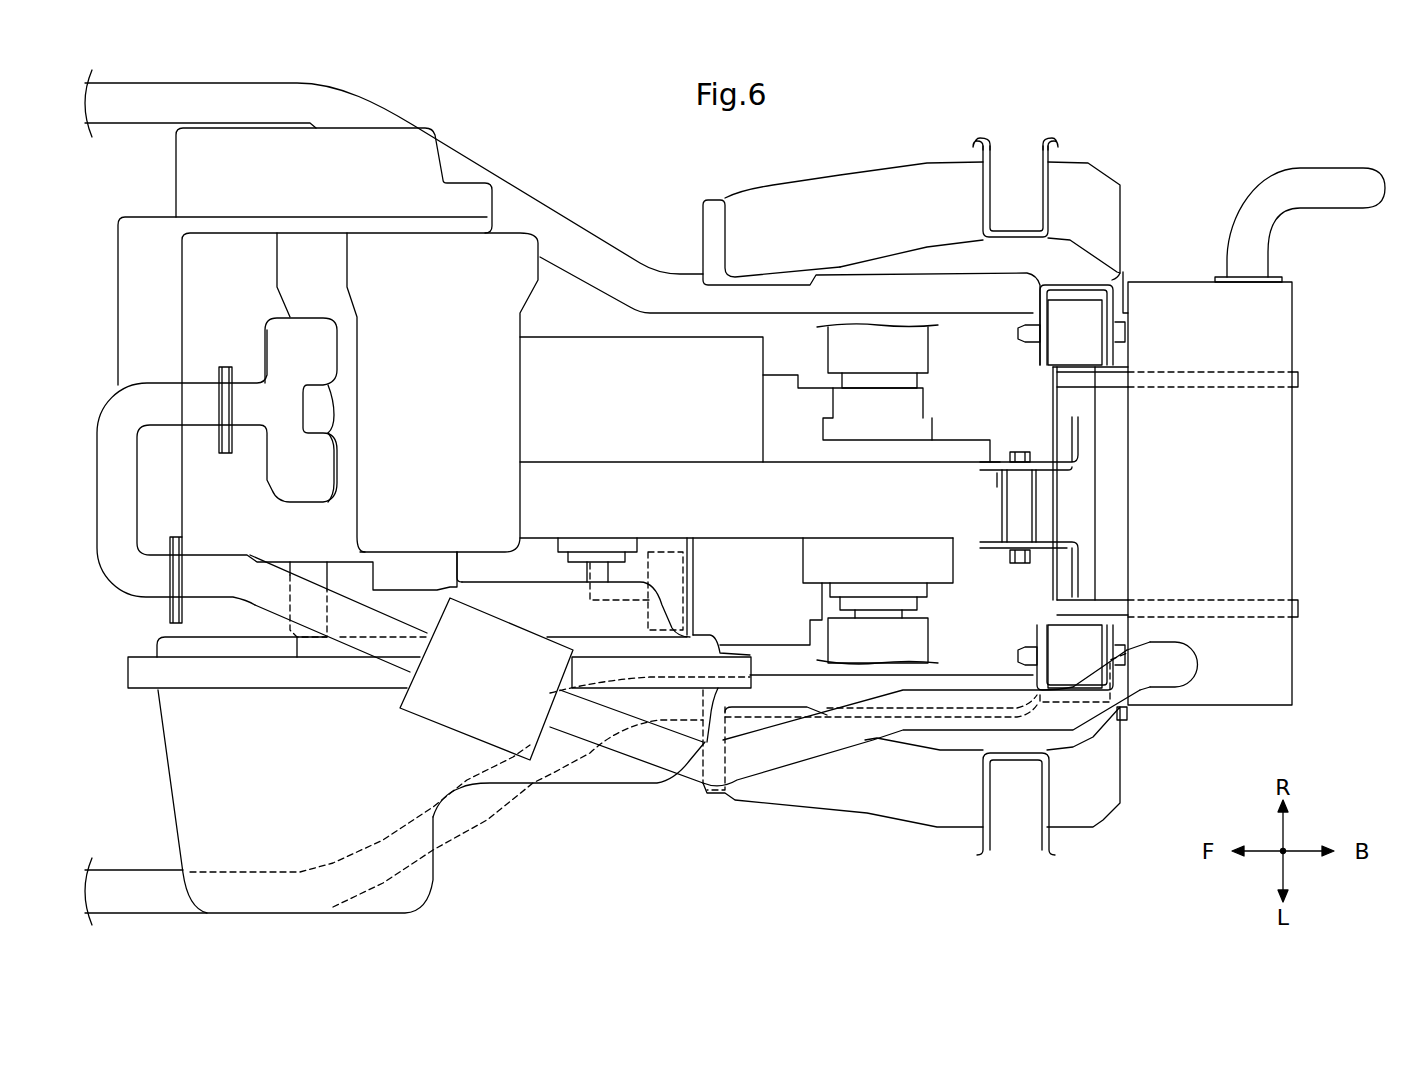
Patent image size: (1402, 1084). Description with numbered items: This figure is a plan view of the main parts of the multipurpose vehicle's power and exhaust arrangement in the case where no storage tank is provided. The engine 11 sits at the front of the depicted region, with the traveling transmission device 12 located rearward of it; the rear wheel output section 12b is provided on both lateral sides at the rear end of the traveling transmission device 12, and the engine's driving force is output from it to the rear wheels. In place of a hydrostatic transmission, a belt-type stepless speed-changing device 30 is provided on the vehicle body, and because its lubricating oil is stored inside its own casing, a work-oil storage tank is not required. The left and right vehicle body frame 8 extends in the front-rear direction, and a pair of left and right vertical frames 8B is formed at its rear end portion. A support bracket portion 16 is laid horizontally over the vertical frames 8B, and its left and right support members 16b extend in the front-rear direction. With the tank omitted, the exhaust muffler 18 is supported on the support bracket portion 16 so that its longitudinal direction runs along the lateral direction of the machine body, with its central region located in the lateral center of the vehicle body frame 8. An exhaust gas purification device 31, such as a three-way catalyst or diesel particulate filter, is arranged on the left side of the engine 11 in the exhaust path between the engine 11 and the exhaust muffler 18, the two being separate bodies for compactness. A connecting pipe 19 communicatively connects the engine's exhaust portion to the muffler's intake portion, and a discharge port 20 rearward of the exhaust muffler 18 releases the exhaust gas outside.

The vehicle body frame 8 is at (578, 250).
The vertical frames 8B is at (1090, 207).
The engine 11 is at (498, 270).
The traveling transmission device 12 is at (935, 490).
The rear wheel output section 12b is at (912, 350).
The support bracket portion 16 is at (1077, 498).
The support members 16b is at (1196, 372).
The exhaust muffler 18 is at (1270, 478).
The connecting pipe 19 is at (267, 591).
The discharge port 20 is at (1333, 190).
The belt-type stepless speed-changing device 30 is at (207, 787).
The exhaust gas purification device 31 is at (460, 703).